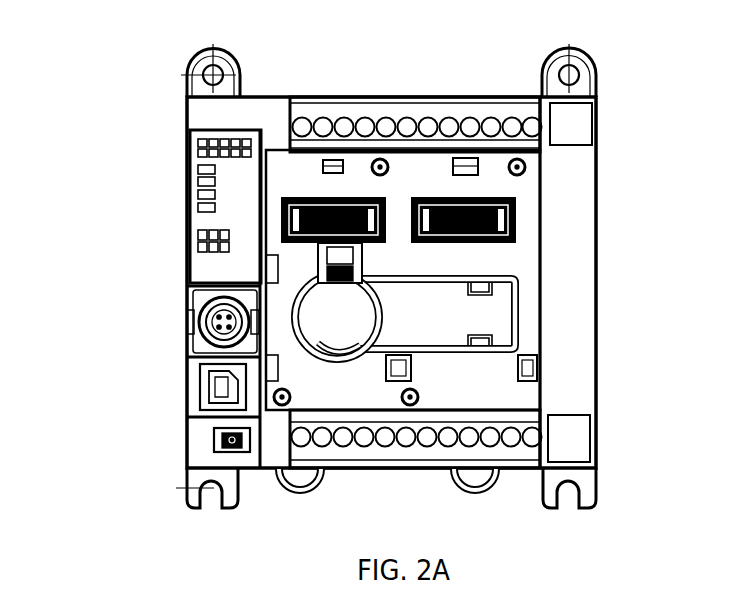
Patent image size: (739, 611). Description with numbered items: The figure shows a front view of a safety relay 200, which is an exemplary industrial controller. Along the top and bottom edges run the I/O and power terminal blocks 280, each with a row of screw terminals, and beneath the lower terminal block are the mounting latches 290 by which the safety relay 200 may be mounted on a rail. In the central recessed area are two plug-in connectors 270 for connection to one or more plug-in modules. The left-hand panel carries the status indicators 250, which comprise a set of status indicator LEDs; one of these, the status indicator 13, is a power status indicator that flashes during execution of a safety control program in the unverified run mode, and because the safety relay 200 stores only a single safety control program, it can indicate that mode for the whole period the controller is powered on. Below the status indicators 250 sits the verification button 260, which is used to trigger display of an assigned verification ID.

The status indicator 13 is at (198, 170).
The safety relay 200 is at (625, 190).
The status indicators 250 is at (190, 263).
The verification button 260 is at (214, 437).
The plug-in connectors 270 is at (296, 198).
The I/O and power terminal blocks 280 is at (433, 108).
The mounting latches 290 is at (293, 492).